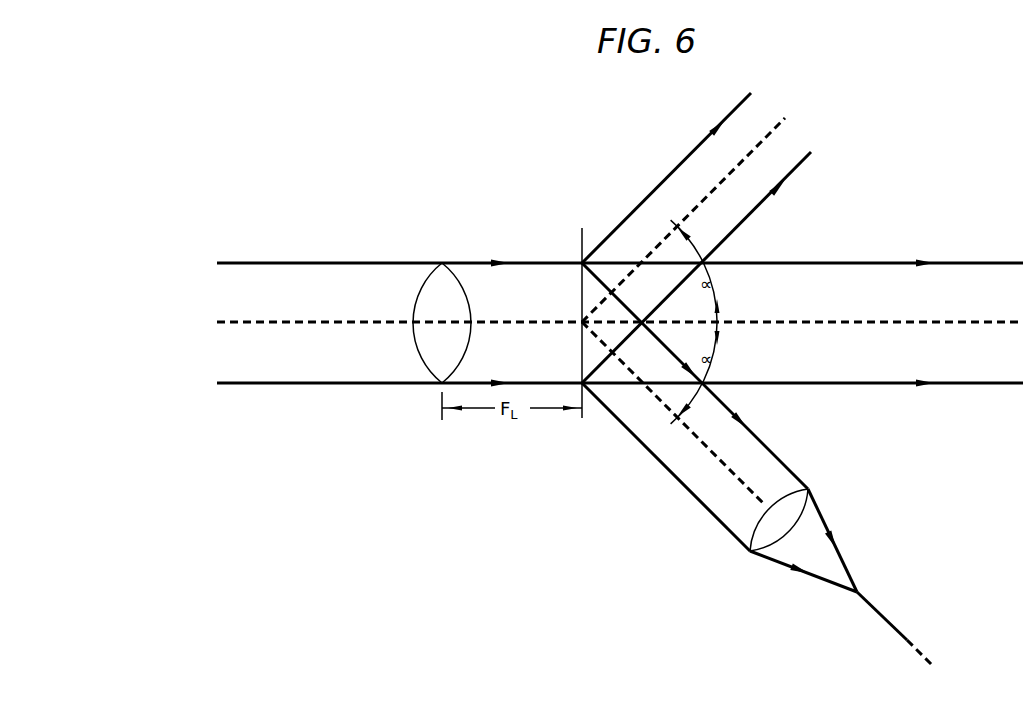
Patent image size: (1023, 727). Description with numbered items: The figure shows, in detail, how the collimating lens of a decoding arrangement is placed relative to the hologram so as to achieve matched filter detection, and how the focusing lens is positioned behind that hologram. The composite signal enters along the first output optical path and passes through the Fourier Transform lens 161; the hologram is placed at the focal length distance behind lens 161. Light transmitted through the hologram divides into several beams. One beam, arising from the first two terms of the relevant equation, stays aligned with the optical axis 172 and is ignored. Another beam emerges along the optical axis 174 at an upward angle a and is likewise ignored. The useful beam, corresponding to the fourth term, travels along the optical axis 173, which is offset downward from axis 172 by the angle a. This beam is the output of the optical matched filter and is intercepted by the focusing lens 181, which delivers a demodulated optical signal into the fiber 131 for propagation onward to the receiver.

The Fourier Transform lens 161 is at (458, 266).
The optical axis 172 is at (842, 321).
The optical axis 174 is at (771, 136).
The optical axis 173 is at (756, 482).
The focusing lens 181 is at (812, 508).
The fiber 131 is at (893, 623).